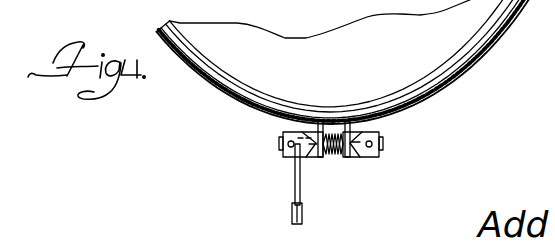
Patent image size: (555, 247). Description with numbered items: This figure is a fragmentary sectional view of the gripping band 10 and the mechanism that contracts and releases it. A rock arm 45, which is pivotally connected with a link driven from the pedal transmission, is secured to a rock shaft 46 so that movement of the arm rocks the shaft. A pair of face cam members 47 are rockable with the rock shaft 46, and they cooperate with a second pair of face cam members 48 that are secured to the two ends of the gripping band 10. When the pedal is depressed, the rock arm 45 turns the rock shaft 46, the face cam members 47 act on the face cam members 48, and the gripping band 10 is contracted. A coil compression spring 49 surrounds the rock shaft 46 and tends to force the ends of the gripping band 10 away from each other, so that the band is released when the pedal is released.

The gripping band 10 is at (440, 89).
The rock arm 45 is at (293, 207).
The rock shaft 46 is at (284, 154).
The face cam members 47 is at (305, 150).
The face cam members 48 is at (352, 134).
The coil compression spring 49 is at (337, 152).